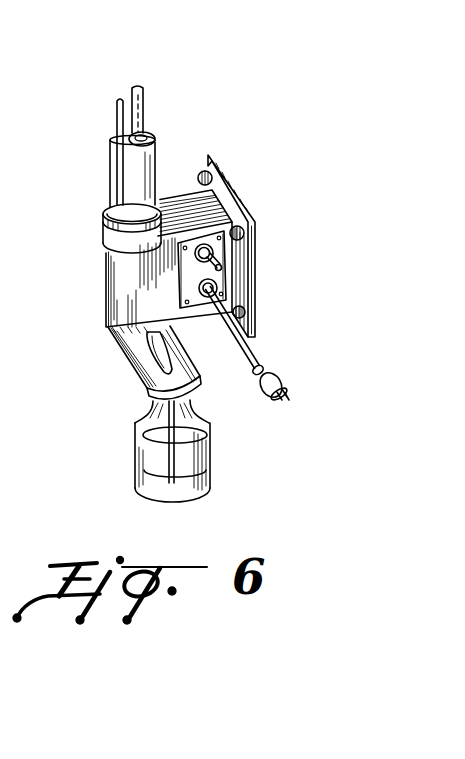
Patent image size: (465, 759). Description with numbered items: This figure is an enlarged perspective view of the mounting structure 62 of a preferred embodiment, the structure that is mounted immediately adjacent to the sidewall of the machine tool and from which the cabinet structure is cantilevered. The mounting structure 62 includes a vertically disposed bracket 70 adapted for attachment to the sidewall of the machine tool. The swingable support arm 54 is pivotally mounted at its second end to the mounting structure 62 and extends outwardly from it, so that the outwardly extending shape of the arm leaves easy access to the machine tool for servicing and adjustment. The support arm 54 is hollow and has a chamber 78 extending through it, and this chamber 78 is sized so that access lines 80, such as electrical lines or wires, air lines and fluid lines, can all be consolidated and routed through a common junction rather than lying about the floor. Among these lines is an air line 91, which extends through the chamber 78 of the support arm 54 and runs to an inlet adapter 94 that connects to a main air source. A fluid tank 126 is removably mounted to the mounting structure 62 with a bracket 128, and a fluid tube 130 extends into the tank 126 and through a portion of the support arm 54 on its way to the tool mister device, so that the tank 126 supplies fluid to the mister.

The support arm 54 is at (123, 174).
The mounting structure 62 is at (185, 212).
The bracket 70 is at (237, 195).
The chamber 78 is at (146, 132).
The access lines 80 is at (106, 115).
The air line 91 is at (146, 86).
The inlet adapter 94 is at (212, 257).
The fluid tank 126 is at (135, 457).
The bracket 128 is at (150, 368).
The fluid tube 130 is at (124, 132).